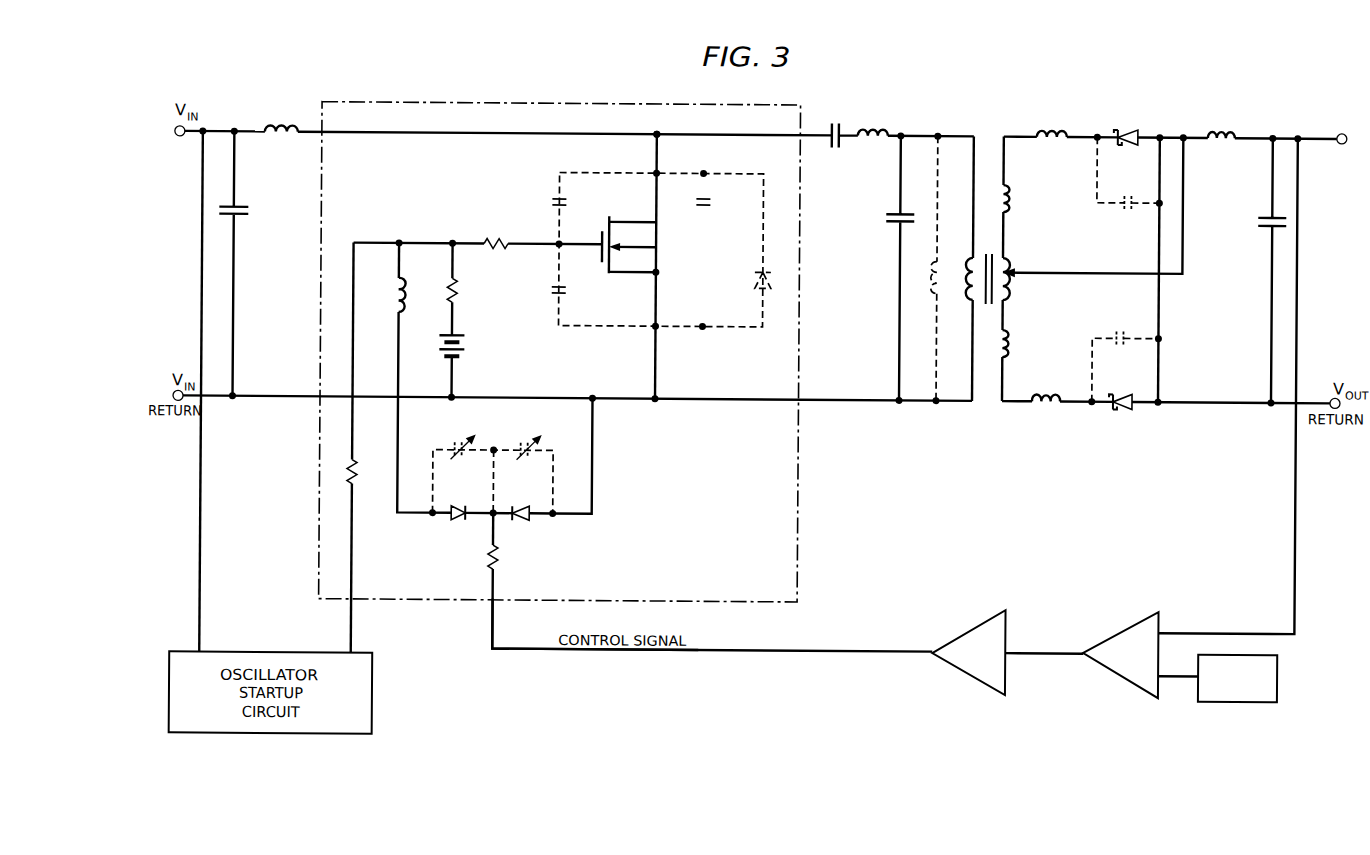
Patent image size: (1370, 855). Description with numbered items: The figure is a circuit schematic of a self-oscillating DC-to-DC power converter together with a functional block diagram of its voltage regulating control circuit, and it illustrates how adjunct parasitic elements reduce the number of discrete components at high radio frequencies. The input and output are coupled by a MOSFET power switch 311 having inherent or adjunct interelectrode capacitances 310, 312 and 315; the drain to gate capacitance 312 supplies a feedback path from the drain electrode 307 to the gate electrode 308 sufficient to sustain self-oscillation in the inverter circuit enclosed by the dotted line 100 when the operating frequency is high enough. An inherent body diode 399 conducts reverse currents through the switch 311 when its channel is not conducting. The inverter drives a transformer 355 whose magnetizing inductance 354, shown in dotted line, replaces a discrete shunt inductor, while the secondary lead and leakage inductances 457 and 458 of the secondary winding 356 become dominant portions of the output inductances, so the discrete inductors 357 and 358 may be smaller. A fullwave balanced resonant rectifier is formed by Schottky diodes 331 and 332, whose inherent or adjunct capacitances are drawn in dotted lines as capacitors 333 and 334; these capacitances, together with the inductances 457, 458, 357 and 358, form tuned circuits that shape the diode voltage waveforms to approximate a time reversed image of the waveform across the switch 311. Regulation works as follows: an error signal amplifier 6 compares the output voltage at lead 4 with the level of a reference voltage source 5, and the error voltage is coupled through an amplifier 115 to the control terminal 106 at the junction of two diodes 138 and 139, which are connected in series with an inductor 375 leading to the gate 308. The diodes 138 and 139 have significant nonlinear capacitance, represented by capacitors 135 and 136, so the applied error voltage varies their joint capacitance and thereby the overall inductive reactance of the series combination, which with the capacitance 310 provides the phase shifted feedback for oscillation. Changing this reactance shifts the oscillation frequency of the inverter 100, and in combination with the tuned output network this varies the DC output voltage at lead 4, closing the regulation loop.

The inverter circuit 100 is at (360, 104).
The drain electrode 307 is at (659, 124).
The gate electrode 308 is at (558, 245).
The interelectrode capacitance 310 is at (566, 291).
The MOSFET power switch 311 is at (661, 250).
The drain to gate capacitance 312 is at (566, 203).
The interelectrode capacitance 315 is at (709, 202).
The body diode 399 is at (748, 283).
The inductor 375 is at (383, 277).
The capacitor 135 is at (461, 436).
The capacitor 136 is at (527, 437).
The diode 138 is at (457, 500).
The diode 139 is at (519, 501).
The control terminal 106 is at (495, 631).
The transformer 355 is at (1005, 126).
The secondary winding 356 is at (1013, 276).
The magnetizing inductance 354 is at (940, 266).
The inductor 357 is at (1052, 120).
The inductor 358 is at (1045, 386).
The leakage and lead inductance 457 is at (1024, 198).
The leakage and lead inductance 458 is at (1023, 350).
The Schottky rectifier diode 331 is at (1128, 124).
The Schottky rectifier diode 332 is at (1118, 388).
The capacitor 333 is at (1128, 173).
The capacitor 334 is at (1125, 352).
The amplifier 115 is at (976, 627).
The error signal amplifier 6 is at (1141, 620).
The reference voltage source 5 is at (1280, 681).
The lead 4 is at (1346, 142).